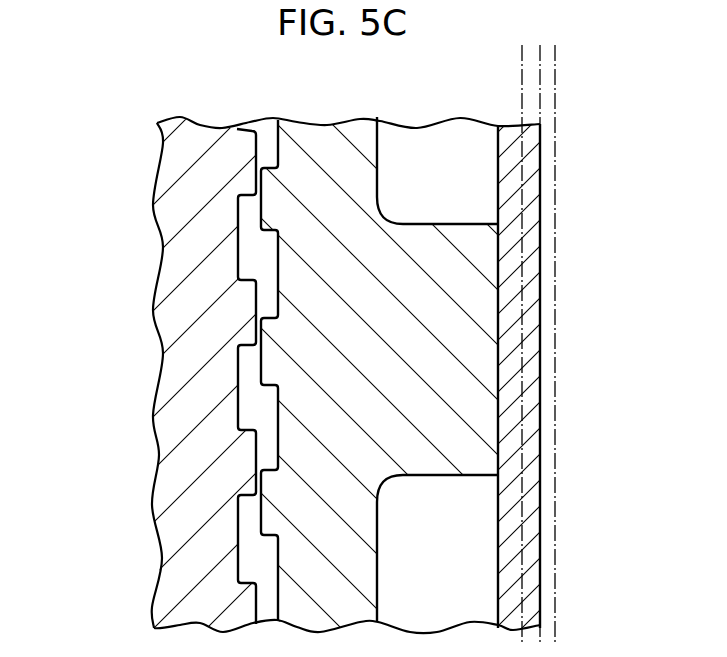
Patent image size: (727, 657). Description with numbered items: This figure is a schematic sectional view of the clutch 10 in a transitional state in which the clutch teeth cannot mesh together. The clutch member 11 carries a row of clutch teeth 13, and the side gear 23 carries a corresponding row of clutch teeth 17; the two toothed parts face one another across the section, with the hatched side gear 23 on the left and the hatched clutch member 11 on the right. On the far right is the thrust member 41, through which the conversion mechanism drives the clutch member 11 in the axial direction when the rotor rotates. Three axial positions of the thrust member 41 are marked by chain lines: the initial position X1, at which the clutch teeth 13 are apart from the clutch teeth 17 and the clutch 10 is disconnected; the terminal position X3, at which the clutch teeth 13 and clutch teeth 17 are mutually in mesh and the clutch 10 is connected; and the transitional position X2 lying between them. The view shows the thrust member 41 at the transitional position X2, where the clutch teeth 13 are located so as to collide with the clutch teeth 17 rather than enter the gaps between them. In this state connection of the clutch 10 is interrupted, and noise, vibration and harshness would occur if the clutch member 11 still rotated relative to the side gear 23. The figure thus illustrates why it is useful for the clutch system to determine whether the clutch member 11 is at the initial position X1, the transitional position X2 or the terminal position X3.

The clutch 10 is at (108, 167).
The clutch member 11 is at (380, 147).
The clutch teeth 13 is at (252, 205).
The clutch teeth 17 is at (262, 148).
The side gear 23 is at (160, 337).
The thrust member 41 is at (540, 336).
The initial position X1 is at (556, 70).
The transitional position X2 is at (536, 329).
The terminal position X3 is at (522, 70).